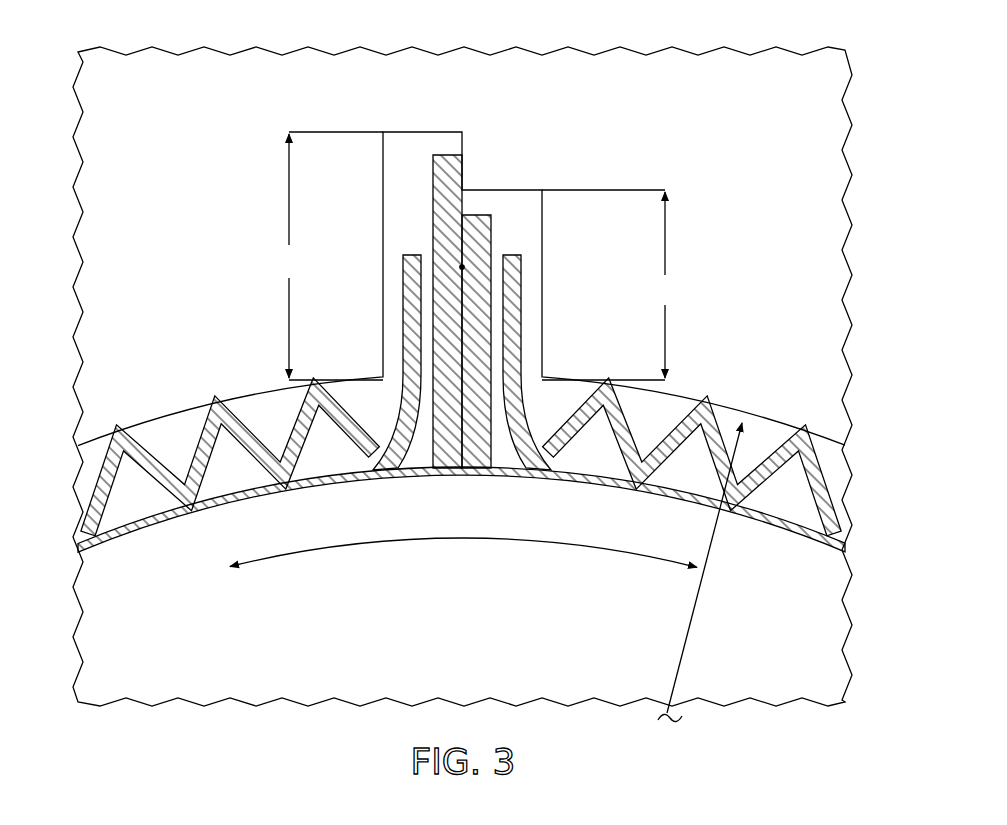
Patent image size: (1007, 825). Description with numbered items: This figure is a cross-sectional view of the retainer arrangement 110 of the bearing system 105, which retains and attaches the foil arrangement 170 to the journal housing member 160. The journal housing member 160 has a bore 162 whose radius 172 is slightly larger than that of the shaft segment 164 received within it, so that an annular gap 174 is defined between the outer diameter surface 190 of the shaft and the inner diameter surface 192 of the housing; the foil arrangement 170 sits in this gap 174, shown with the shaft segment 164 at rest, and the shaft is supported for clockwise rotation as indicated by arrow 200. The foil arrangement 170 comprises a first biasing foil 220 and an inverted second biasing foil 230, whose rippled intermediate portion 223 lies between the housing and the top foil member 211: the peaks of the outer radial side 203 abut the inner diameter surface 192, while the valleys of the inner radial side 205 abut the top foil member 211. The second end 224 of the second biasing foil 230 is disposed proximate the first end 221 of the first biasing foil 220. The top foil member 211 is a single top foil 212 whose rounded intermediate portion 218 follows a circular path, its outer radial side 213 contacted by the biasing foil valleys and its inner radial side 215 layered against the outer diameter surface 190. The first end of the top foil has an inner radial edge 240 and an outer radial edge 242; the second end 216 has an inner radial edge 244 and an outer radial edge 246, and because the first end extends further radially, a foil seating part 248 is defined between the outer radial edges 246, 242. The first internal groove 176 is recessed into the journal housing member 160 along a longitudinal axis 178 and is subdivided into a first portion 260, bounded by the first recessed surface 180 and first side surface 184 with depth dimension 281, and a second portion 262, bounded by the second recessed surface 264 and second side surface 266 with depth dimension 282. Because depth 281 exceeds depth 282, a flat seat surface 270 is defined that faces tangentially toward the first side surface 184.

The bearing system 105 is at (207, 106).
The retainer arrangement 110 is at (541, 103).
The journal housing member 160 is at (777, 103).
The bore 162 is at (268, 405).
The shaft segment 164 is at (372, 640).
The foil arrangement 170 is at (196, 435).
The radius 172 is at (683, 652).
The annular gap 174 is at (832, 470).
The first internal groove 176 is at (400, 233).
The longitudinal axis 178 is at (463, 267).
The first recessed surface 180 is at (402, 134).
The first side surface 184 is at (388, 258).
The outer diameter surface 190 is at (805, 534).
The inner diameter surface 192 is at (768, 427).
The arrow 200 is at (598, 550).
The outer radial side 203 is at (193, 412).
The inner radial side 205 is at (210, 493).
The top foil member 211 is at (89, 562).
The top foil 212 is at (77, 548).
The outer radial side 213 is at (143, 514).
The inner radial side 215 is at (180, 518).
The second end 216 is at (494, 228).
The intermediate portion 218 is at (310, 483).
The first biasing foil 220 is at (316, 392).
The first end 221 is at (402, 302).
The intermediate portion 223 is at (130, 443).
The second end 224 is at (512, 327).
The second biasing foil 230 is at (683, 408).
The inner radial edge 240 is at (428, 463).
The outer radial edge 242 is at (464, 133).
The inner radial edge 244 is at (497, 463).
The outer radial edge 246 is at (482, 240).
The foil seating part 248 is at (466, 157).
The first portion 260 is at (395, 162).
The second portion 262 is at (530, 230).
The second recessed surface 264 is at (543, 198).
The second side surface 266 is at (543, 306).
The seat surface 270 is at (463, 194).
The depth dimension 281 is at (325, 256).
The depth dimension 282 is at (614, 285).